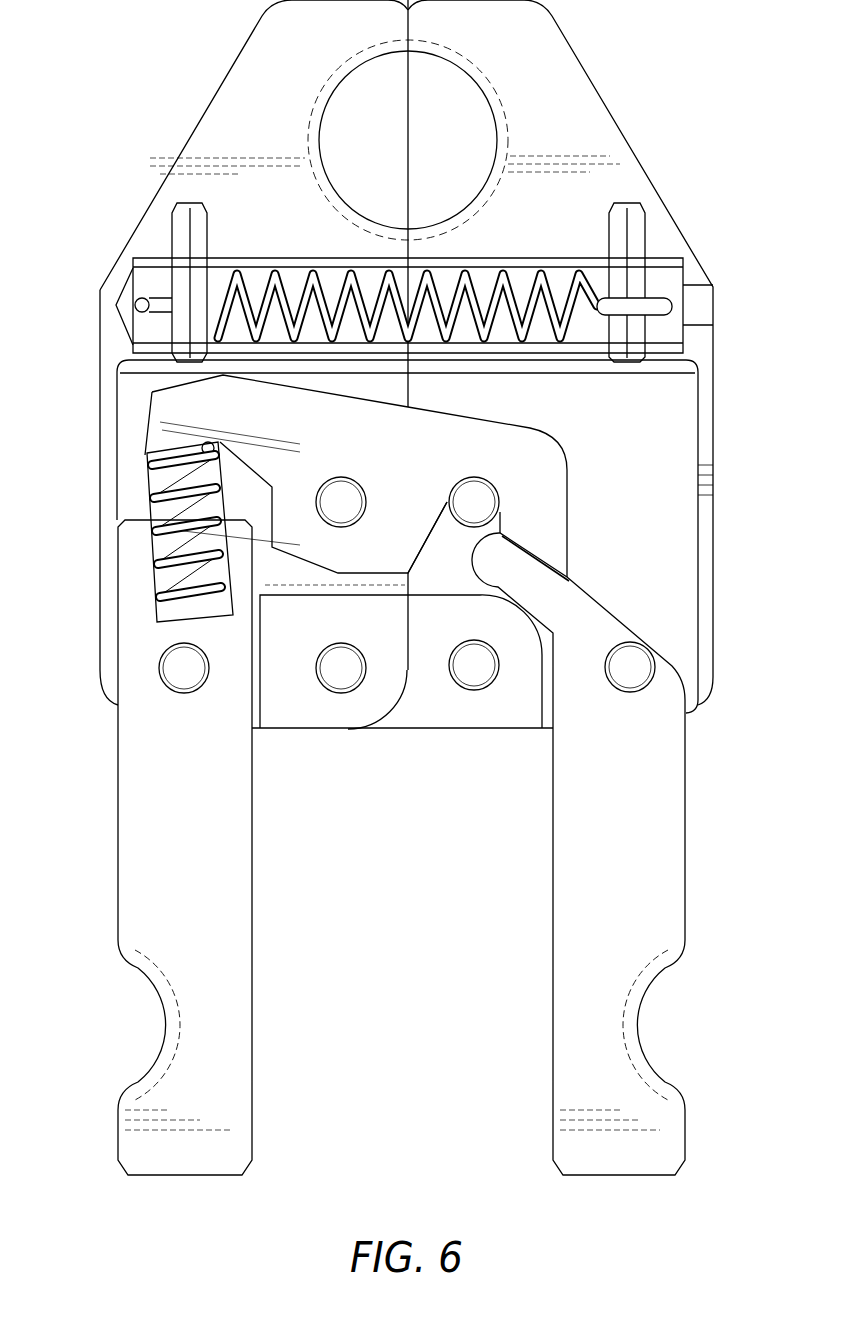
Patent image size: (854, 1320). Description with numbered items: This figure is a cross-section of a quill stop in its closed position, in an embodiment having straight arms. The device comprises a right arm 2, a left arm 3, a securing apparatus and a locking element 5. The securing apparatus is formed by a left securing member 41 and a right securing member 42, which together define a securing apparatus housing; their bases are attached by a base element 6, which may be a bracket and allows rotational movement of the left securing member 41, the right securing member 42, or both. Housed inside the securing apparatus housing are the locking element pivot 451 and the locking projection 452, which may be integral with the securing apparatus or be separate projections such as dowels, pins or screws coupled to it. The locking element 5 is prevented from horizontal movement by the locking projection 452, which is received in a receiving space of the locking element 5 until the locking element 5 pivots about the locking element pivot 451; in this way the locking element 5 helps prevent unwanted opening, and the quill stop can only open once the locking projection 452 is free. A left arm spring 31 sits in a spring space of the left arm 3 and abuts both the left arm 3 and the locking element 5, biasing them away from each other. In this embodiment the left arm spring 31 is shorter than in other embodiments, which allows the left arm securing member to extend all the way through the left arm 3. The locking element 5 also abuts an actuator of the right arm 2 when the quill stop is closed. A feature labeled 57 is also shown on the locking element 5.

The left securing member 41 is at (257, 83).
The right securing member 42 is at (552, 75).
The locking element pivot 451 is at (341, 480).
The locking projection 452 is at (483, 505).
The locking element 5 is at (532, 483).
The guide slot 57 is at (455, 530).
The left arm spring 31 is at (162, 523).
The base element 6 is at (407, 705).
The left arm 3 is at (140, 875).
The right arm 2 is at (663, 867).